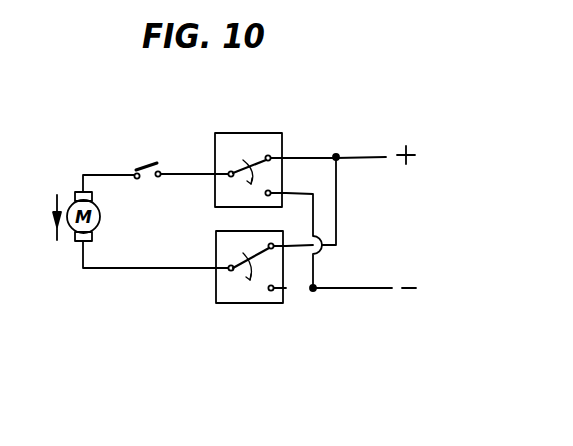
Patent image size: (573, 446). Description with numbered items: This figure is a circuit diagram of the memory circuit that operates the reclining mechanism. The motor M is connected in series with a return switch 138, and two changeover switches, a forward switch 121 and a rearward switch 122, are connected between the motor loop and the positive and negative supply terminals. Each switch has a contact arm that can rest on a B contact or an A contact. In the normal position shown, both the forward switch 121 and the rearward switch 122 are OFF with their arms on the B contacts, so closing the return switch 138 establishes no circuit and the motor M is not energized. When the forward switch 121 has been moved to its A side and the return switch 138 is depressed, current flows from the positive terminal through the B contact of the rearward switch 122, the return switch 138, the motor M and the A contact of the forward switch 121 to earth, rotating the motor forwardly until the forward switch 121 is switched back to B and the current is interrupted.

The rearward switch 122 is at (279, 133).
The forward switch 121 is at (249, 303).
The return switch 138 is at (158, 162).